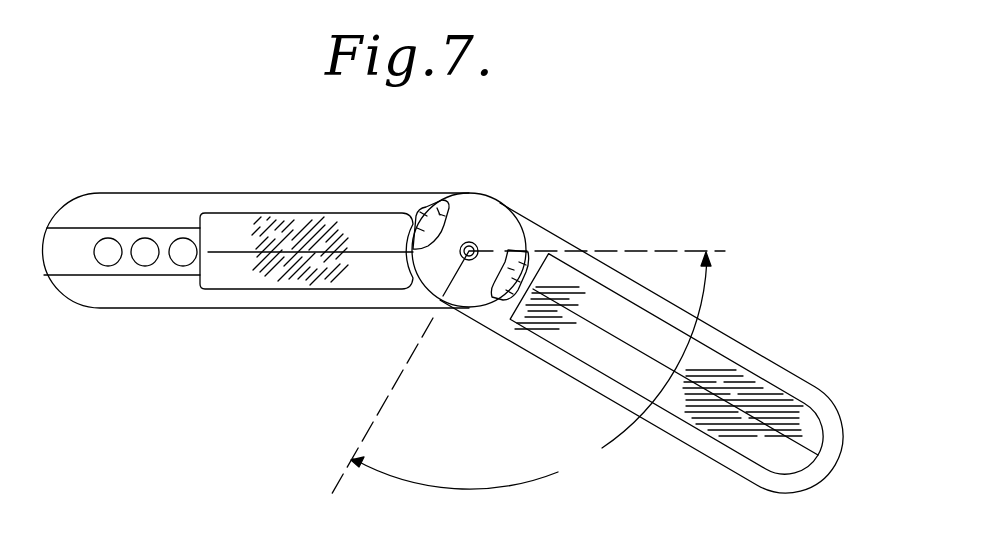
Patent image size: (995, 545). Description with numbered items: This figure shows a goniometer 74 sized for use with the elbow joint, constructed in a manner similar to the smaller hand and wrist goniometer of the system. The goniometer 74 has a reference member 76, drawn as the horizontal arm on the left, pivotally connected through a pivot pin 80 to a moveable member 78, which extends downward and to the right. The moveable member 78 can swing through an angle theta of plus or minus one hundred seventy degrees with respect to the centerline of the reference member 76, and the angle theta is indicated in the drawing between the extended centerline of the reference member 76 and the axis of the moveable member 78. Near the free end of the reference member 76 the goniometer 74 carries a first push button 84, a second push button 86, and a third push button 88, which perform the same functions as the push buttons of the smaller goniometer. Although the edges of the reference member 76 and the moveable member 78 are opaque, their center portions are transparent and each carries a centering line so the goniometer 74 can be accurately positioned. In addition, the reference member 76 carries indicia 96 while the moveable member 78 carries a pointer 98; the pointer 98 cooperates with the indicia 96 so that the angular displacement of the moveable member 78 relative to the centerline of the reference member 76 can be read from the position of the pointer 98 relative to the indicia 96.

The goniometer 74 is at (281, 129).
The reference member 76 is at (255, 279).
The moveable member 78 is at (663, 366).
The pivot pin 80 is at (466, 258).
The first push button 84 is at (141, 244).
The second push button 86 is at (180, 265).
The third push button 88 is at (103, 265).
The indicia 96 is at (505, 300).
The pointer 98 is at (428, 208).